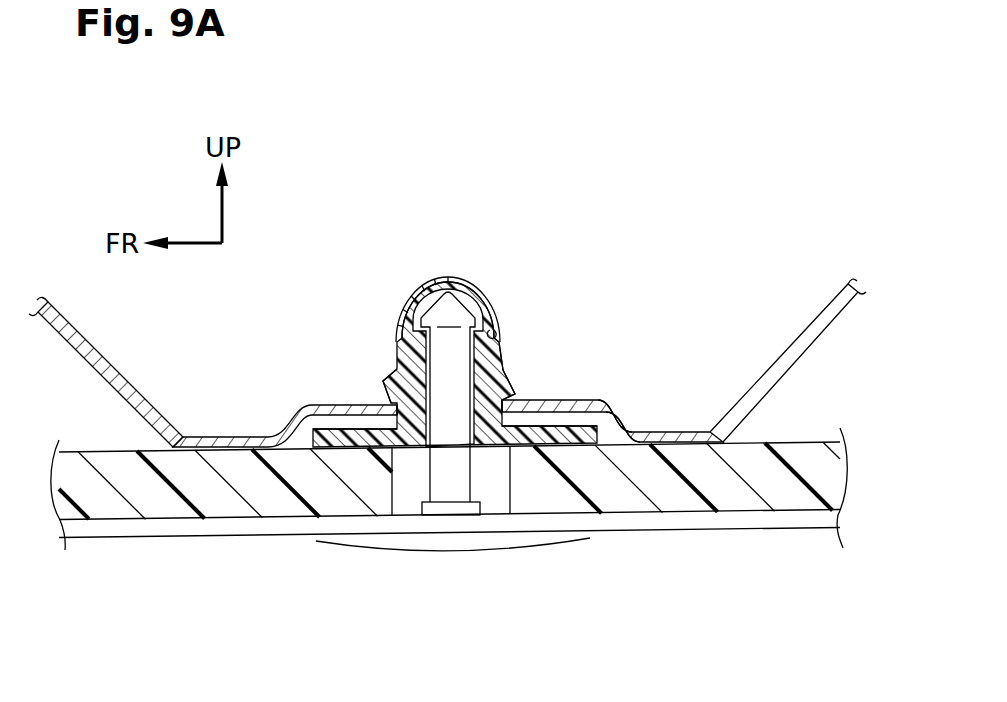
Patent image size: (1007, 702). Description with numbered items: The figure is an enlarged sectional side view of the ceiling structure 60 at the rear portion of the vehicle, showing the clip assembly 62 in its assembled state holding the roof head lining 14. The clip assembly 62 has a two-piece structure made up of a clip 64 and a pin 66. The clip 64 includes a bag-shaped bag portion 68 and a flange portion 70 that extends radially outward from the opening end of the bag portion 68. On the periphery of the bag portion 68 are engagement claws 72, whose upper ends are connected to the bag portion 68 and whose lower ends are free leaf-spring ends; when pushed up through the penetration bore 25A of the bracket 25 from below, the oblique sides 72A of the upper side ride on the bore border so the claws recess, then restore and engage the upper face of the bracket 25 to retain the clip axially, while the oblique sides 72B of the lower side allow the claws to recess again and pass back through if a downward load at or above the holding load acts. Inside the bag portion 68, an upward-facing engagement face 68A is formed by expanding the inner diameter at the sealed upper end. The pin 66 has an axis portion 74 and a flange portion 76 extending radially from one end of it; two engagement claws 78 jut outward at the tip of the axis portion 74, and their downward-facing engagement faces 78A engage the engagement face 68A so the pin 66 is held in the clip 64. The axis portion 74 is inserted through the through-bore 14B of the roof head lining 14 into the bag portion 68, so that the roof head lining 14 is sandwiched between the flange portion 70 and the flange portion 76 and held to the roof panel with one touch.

The roof head lining 14 is at (808, 455).
The through-bore 14B is at (525, 495).
The bracket 25 is at (447, 441).
The penetration bore 25A is at (420, 417).
The ceiling structure 60 is at (689, 231).
The clip assembly 62 is at (590, 295).
The clip 64 is at (481, 410).
The pin 66 is at (458, 426).
The bag portion 68 is at (458, 423).
The engagement face 68A is at (464, 283).
The flange portion 70 is at (641, 398).
The engagement claws 72 is at (385, 379).
The oblique sides of the upper side 72A is at (505, 349).
The oblique sides of the lower side 72B is at (515, 394).
The axis portion 74 is at (442, 487).
The flange portion 76 is at (480, 545).
The engagement claws 78 is at (493, 275).
The engagement faces 78A is at (489, 327).